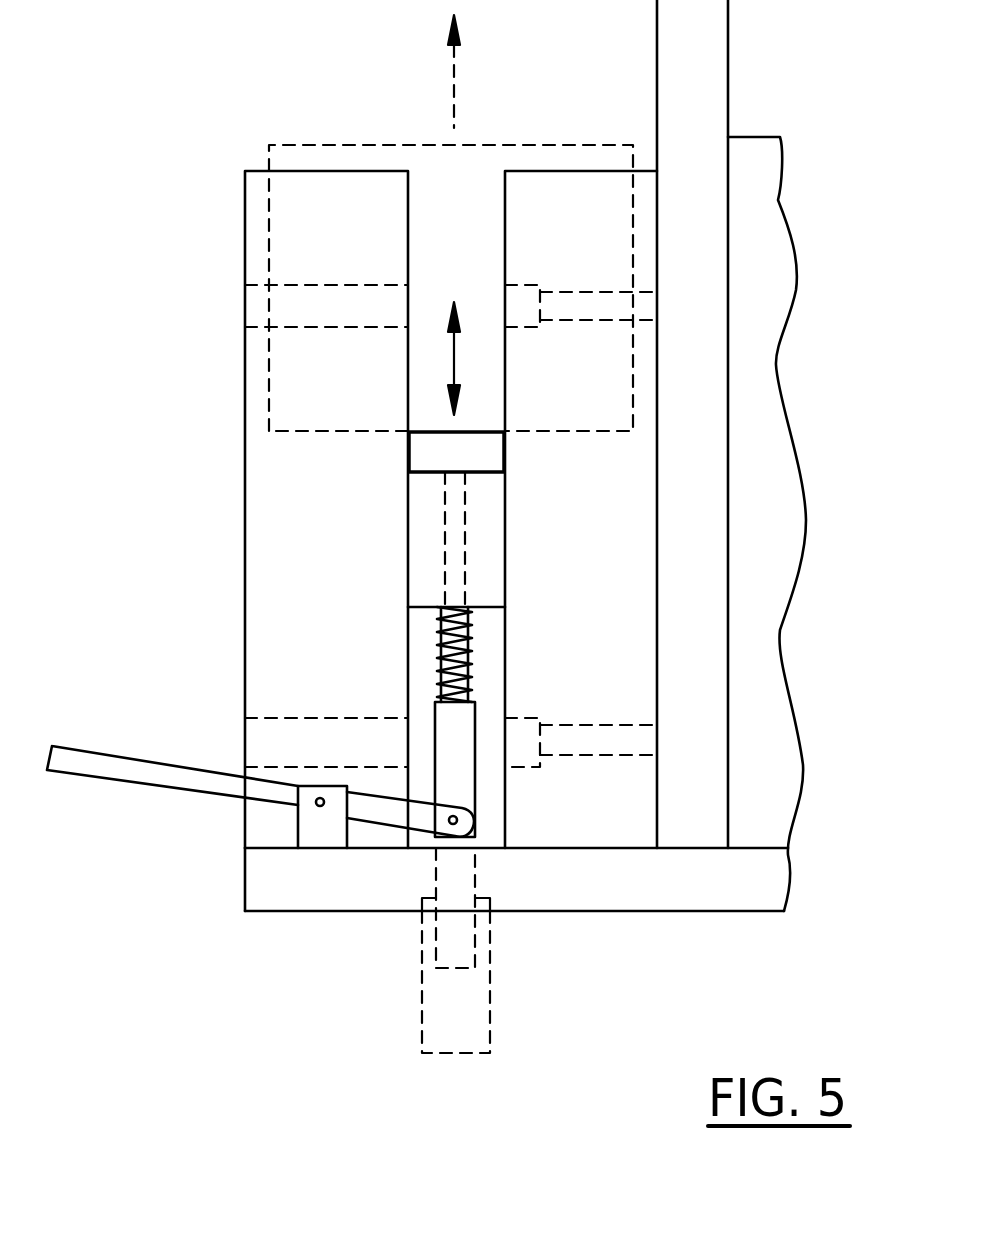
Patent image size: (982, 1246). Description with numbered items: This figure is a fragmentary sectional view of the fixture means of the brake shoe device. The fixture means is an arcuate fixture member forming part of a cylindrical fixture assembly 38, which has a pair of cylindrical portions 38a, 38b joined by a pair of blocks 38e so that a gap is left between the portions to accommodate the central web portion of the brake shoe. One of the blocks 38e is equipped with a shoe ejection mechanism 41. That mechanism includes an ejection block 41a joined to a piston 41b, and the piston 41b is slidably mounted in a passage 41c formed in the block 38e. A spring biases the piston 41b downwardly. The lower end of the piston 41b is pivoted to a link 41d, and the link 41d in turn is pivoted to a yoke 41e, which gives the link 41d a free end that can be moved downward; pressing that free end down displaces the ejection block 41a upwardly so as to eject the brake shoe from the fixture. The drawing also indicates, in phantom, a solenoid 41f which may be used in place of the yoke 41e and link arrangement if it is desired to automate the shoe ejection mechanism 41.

The cylindrical fixture assembly 38 is at (192, 513).
The cylindrical portion 38a is at (249, 188).
The cylindrical portion 38b is at (643, 183).
The block 38e is at (416, 553).
The shoe ejection mechanism 41 is at (500, 866).
The ejection block 41a is at (500, 458).
The piston 41b is at (470, 671).
The passage 41c is at (454, 577).
The link 41d is at (393, 812).
The yoke 41e is at (313, 836).
The solenoid 41f is at (460, 1055).